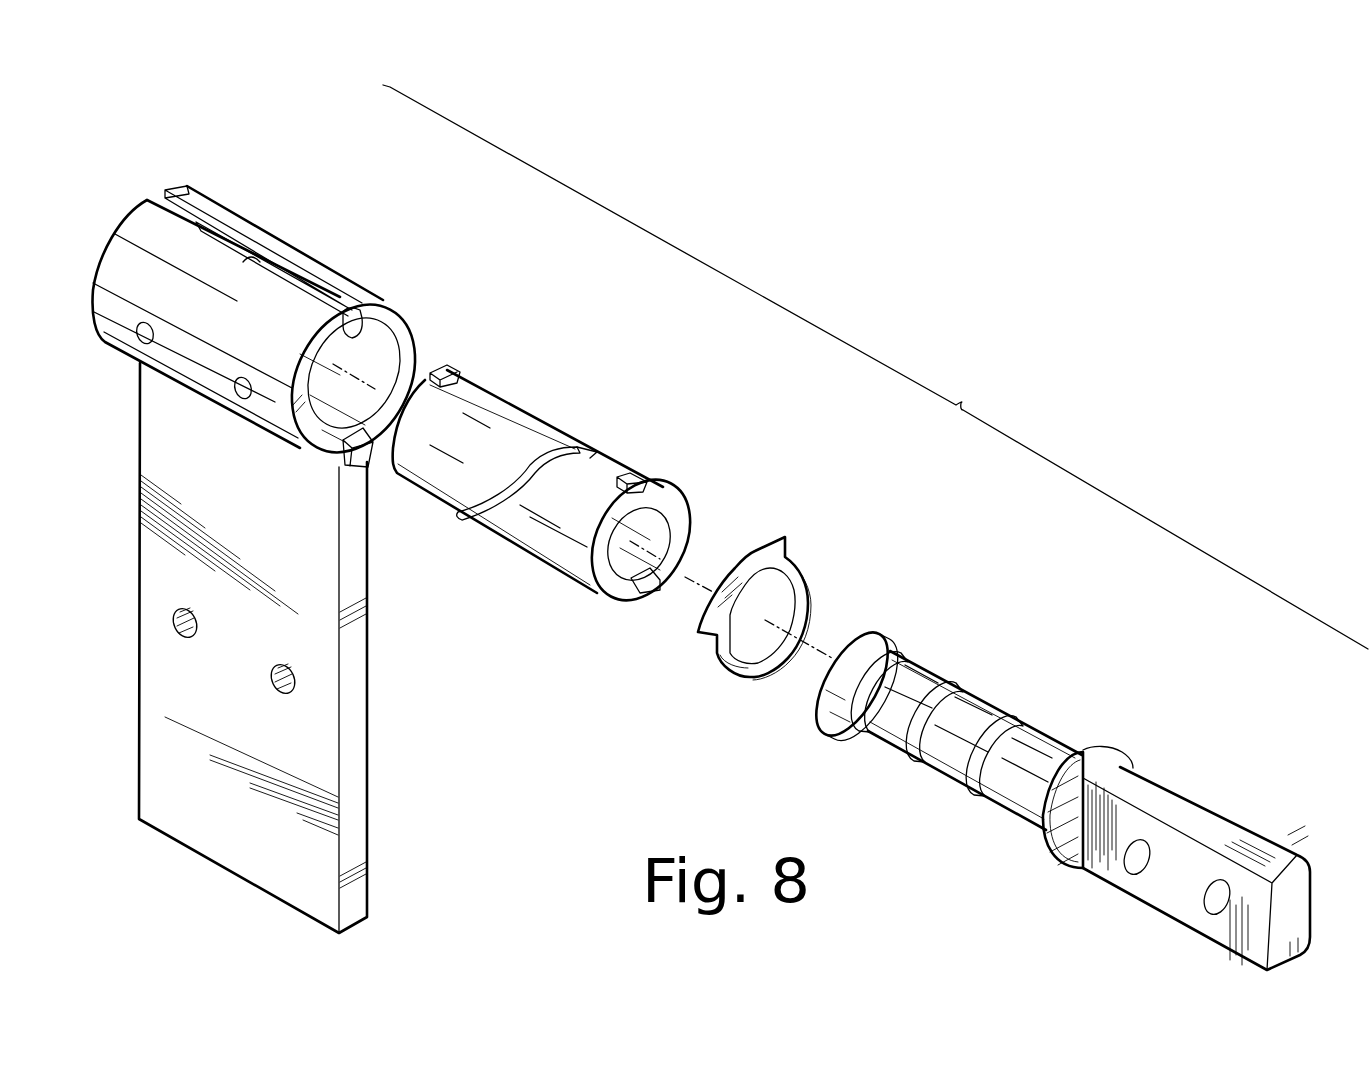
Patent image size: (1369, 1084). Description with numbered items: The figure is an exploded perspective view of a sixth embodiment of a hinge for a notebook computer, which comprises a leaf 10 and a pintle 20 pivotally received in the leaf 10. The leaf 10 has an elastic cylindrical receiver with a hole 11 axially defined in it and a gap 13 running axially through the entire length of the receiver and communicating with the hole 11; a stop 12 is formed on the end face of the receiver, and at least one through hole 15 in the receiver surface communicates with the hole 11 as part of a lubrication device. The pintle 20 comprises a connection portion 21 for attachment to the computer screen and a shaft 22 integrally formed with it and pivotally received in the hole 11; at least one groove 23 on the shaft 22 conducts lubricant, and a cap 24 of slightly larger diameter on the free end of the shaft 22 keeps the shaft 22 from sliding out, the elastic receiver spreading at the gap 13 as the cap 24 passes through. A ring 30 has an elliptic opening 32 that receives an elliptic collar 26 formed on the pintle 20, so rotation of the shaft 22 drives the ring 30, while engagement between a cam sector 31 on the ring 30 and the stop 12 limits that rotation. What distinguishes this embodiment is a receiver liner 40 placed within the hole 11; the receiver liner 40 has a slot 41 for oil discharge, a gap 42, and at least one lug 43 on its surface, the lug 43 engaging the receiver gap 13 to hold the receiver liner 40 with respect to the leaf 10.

The leaf 10 is at (381, 807).
The hole 11 is at (352, 413).
The stop 12 is at (366, 460).
The gap 13 is at (288, 267).
The through hole 15 is at (143, 336).
The pintle 20 is at (1056, 793).
The connection portion 21 is at (1220, 830).
The shaft 22 is at (995, 717).
The groove 23 is at (957, 692).
The cap 24 is at (842, 717).
The elliptic collar 26 is at (1095, 746).
The ring 30 is at (796, 584).
The cam sector 31 is at (756, 560).
The elliptic opening 32 is at (795, 603).
The receiver liner 40 is at (585, 461).
The slot 41 is at (576, 446).
The gap 42 is at (639, 597).
The lug 43 is at (440, 370).